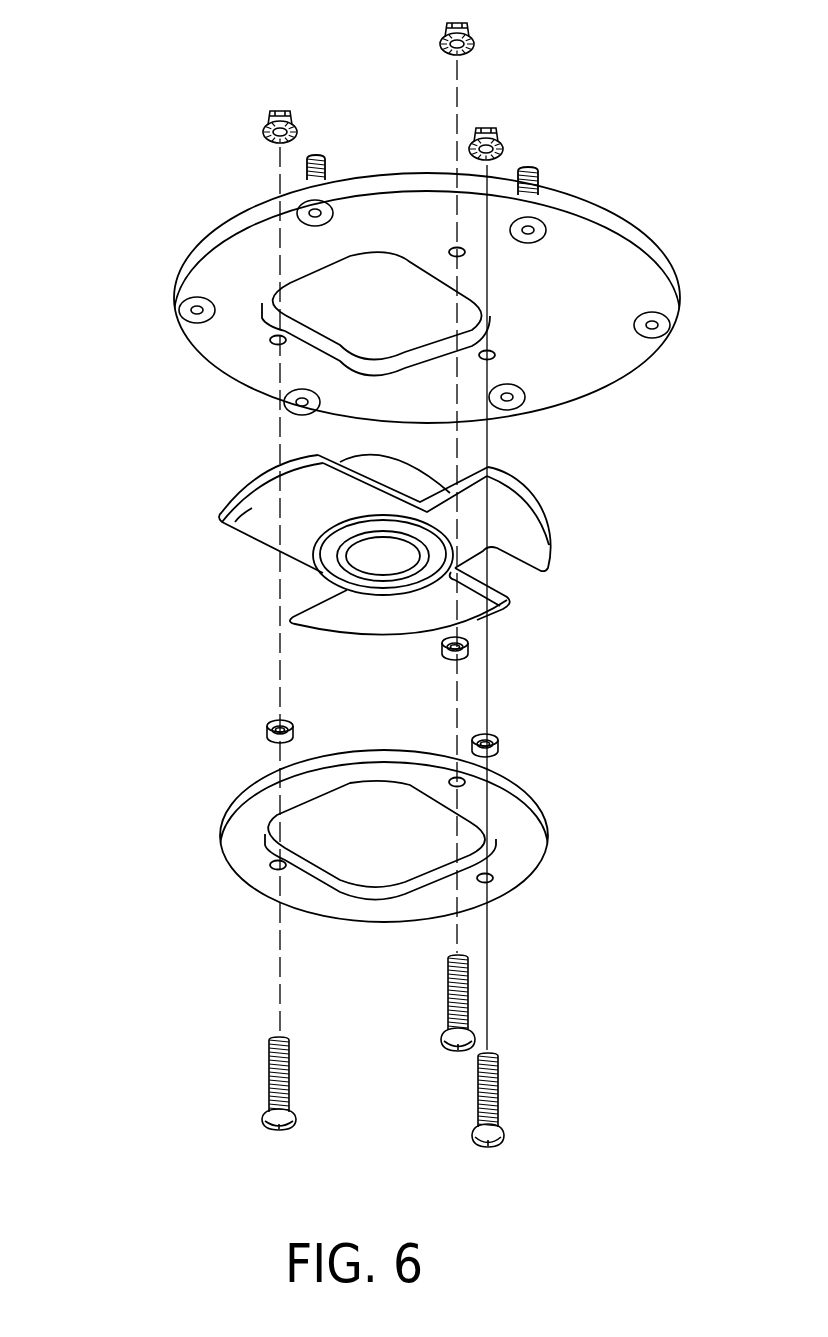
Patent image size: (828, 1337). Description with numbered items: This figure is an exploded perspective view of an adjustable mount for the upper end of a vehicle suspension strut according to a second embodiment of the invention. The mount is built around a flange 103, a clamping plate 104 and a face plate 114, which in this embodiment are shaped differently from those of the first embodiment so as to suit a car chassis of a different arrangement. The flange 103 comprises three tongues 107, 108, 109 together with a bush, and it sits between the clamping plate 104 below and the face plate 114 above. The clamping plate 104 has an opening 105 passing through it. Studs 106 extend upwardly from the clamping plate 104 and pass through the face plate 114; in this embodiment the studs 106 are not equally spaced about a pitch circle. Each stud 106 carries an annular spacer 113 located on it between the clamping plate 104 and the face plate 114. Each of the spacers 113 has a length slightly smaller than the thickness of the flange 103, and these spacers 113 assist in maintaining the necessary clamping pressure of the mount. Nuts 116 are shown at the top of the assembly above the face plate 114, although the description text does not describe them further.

The flange 103 is at (388, 569).
The clamping plate 104 is at (390, 842).
The opening 105 is at (363, 817).
The stud 106 is at (500, 1090).
The tongue 107 is at (222, 522).
The tongue 108 is at (520, 517).
The tongue 109 is at (338, 617).
The annular spacer 113 is at (468, 645).
The face plate 114 is at (563, 385).
The flanged lock nuts 116 is at (475, 36).